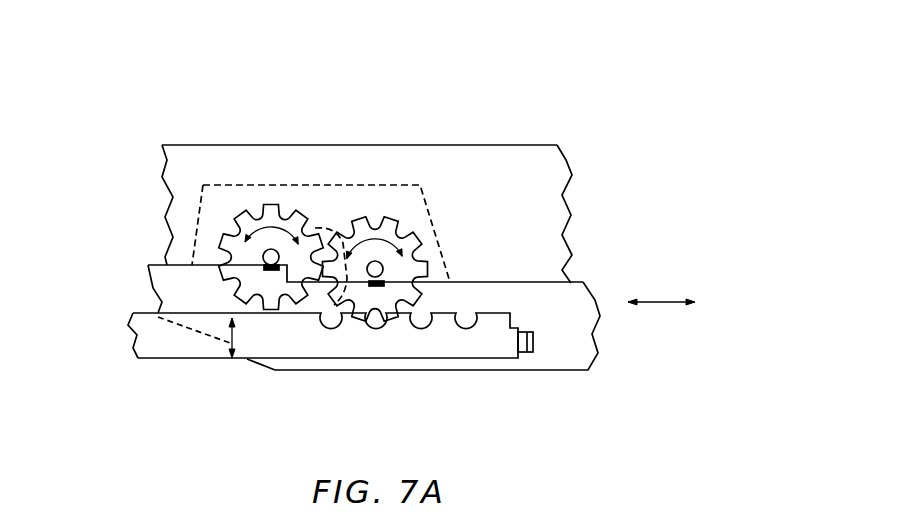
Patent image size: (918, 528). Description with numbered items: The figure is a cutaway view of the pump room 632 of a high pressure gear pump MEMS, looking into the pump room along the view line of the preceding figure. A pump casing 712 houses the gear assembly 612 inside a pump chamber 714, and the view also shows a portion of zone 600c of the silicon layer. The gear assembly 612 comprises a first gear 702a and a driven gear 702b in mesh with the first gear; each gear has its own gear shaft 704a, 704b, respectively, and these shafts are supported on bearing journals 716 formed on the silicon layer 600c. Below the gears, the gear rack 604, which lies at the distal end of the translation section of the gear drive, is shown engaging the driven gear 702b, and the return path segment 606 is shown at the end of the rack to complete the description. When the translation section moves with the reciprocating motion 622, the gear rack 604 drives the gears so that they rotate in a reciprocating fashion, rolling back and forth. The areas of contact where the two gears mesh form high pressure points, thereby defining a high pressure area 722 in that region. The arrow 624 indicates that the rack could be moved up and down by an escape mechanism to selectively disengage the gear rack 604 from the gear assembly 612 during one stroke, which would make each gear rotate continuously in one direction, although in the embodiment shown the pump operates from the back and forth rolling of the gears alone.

The gear assembly 612 is at (327, 207).
The pump room 632 is at (566, 64).
The first gear 702a is at (268, 207).
The driven gear 702b is at (373, 220).
The high pressure area 722 is at (342, 263).
The gear shaft 704a is at (264, 254).
The gear shaft 704b is at (381, 264).
The pump chamber 714 is at (205, 213).
The pump casing 712 is at (570, 228).
The reciprocating motion 622 is at (663, 303).
The zone of the silicon layer 600c is at (597, 353).
The return path segment 606 is at (533, 346).
The gear rack 604 is at (375, 348).
The bearing journals 716 is at (273, 268).
The arrow indicating up and down movement of the rack 624 is at (230, 343).